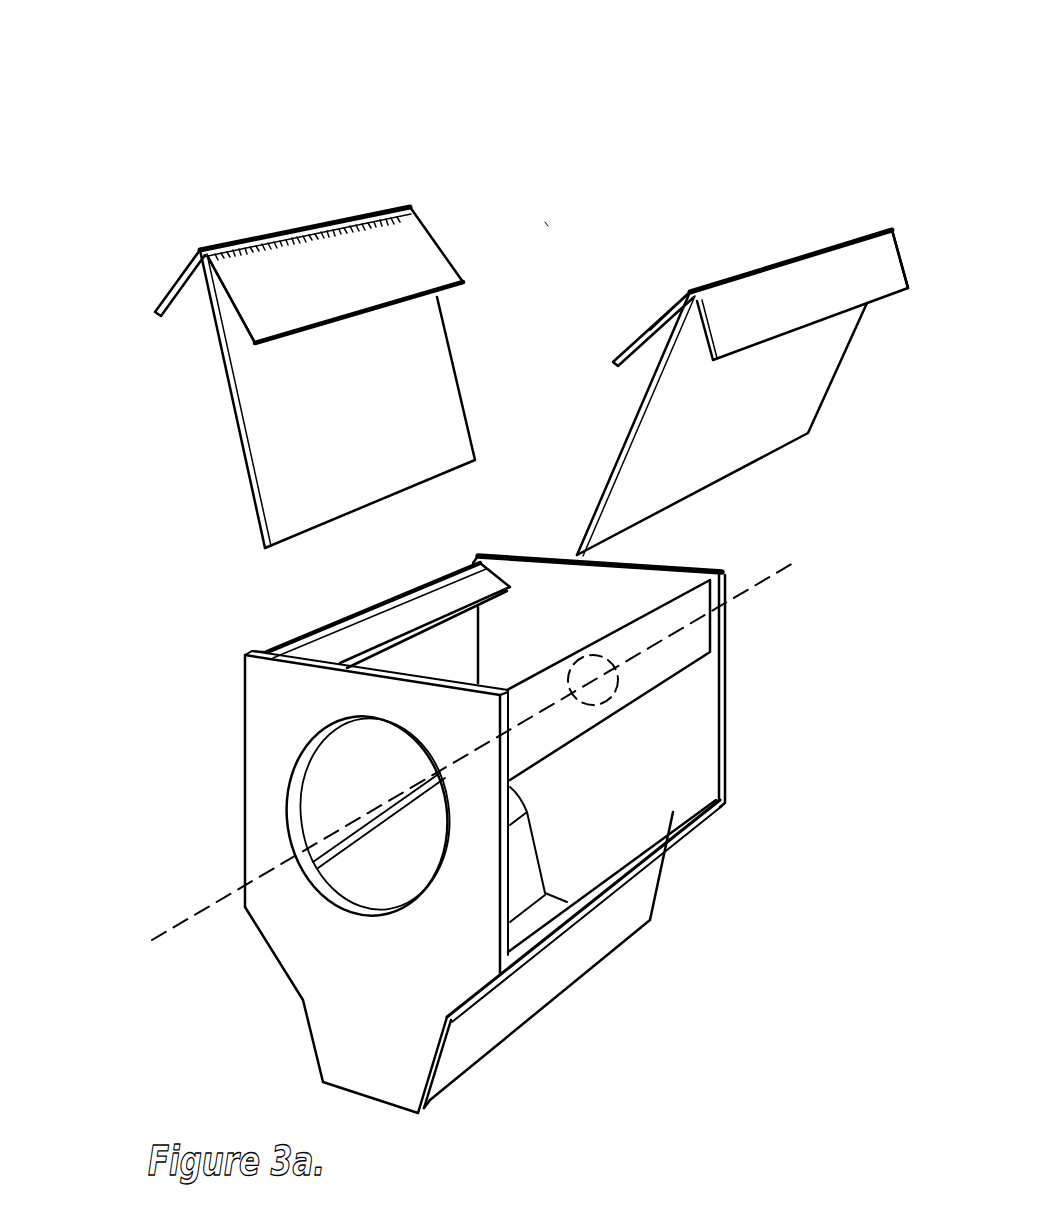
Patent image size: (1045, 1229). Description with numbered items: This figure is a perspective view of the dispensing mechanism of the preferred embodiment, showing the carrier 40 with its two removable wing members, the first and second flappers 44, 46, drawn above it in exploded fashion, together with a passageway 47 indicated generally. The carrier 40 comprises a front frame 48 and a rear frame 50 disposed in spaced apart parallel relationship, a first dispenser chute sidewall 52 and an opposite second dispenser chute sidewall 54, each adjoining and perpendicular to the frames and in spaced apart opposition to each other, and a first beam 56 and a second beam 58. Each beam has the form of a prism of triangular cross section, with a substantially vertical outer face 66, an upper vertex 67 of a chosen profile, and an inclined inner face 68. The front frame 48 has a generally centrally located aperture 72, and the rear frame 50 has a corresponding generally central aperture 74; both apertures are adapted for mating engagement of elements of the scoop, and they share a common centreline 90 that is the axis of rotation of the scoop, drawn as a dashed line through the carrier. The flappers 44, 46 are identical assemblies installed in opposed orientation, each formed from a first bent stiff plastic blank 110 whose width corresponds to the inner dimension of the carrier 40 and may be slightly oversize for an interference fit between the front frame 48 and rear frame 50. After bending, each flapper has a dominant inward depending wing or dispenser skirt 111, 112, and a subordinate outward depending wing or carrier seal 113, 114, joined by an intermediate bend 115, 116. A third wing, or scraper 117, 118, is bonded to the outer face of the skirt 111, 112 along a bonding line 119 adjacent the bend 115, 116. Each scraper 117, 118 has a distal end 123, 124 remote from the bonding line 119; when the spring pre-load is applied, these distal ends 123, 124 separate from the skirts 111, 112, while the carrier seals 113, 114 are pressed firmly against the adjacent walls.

The carrier 40 is at (157, 653).
The first flapper 44 is at (802, 163).
The second flapper 46 is at (252, 120).
The passageway 47 is at (545, 220).
The front frame 48 is at (268, 718).
The rear frame 50 is at (627, 598).
The first dispenser chute sidewall 52 is at (462, 1052).
The second dispenser chute sidewall 54 is at (296, 1010).
The first beam 56 is at (652, 633).
The second beam 58 is at (308, 648).
The substantially vertical outer face 66 is at (650, 665).
The upper vertex 67 is at (307, 646).
The inclined inner face 68 is at (433, 598).
The aperture 72 is at (291, 773).
The aperture 74 is at (562, 682).
The centreline 90 is at (213, 893).
The first bent stiff plastic blank 110 is at (182, 268).
The dispenser skirt 111 is at (423, 452).
The dispenser skirt 112 is at (719, 453).
The carrier seal 113 is at (166, 290).
The carrier seal 114 is at (907, 260).
The intermediate bend 115 is at (396, 206).
The intermediate bend 116 is at (895, 224).
The scraper 117 is at (427, 220).
The scraper 118 is at (647, 327).
The bonding line 119 is at (342, 248).
The distal end 123 is at (287, 343).
The distal end 124 is at (642, 363).